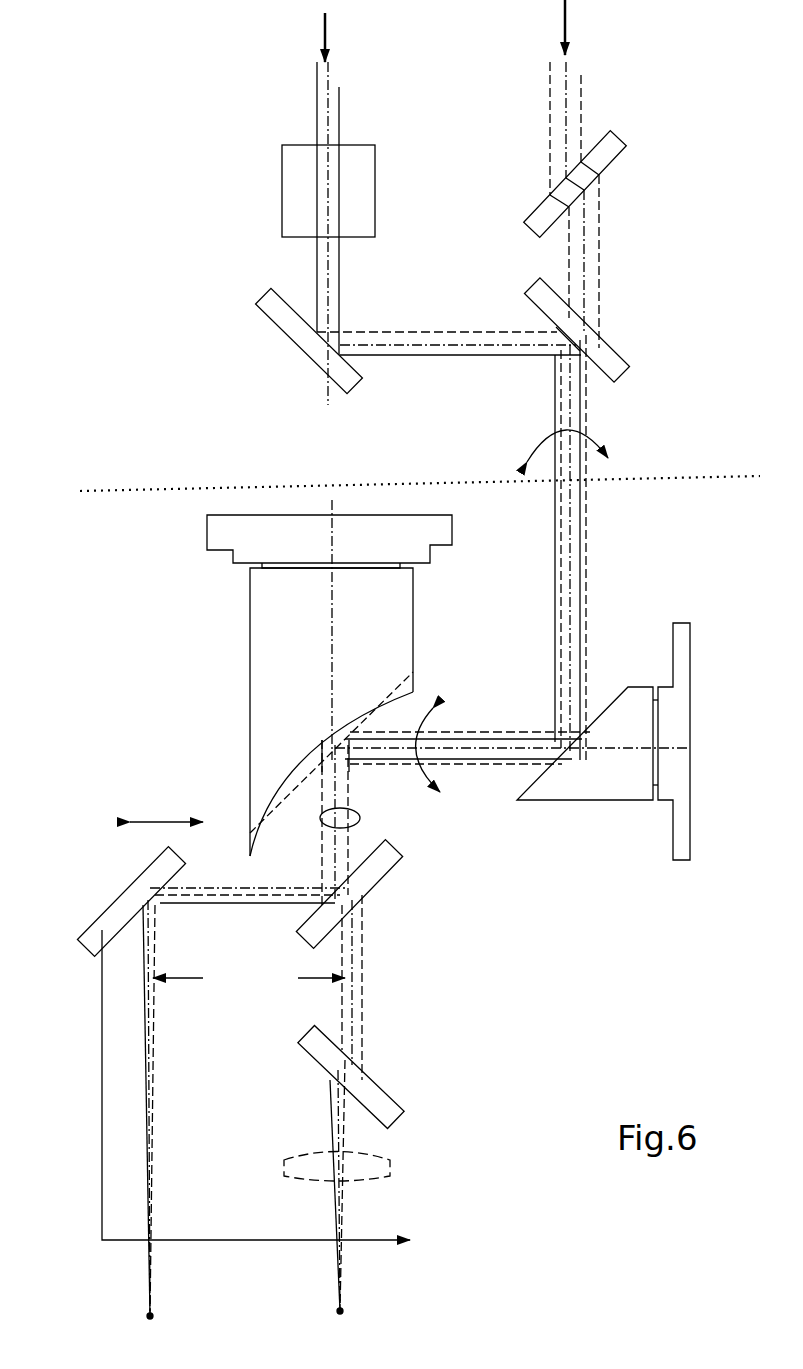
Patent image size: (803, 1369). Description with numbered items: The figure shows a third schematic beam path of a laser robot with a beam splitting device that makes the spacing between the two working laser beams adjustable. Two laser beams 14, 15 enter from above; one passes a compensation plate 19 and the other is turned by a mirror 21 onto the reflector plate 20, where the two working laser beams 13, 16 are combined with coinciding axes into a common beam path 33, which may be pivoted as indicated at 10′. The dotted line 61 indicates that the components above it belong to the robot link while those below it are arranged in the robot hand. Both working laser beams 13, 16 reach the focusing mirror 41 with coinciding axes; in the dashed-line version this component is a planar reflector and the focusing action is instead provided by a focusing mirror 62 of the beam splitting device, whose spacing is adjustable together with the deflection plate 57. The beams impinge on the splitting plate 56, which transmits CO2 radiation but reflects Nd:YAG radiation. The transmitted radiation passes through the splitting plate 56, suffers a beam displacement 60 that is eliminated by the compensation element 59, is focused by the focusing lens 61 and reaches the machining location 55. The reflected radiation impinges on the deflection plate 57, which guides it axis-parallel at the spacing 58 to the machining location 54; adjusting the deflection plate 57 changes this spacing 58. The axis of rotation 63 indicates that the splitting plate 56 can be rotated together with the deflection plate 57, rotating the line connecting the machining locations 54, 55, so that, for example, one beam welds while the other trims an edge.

The first illumination light beam 15 is at (343, 90).
The second illumination light beam 14 is at (582, 85).
The compensation plate 19 is at (613, 145).
The deflecting mirror 21 is at (268, 300).
The reflector plate 20 is at (617, 369).
The common beam path 33 is at (537, 403).
The pivot axis 10′ is at (600, 436).
The dotted line / focusing lens 61 is at (700, 478).
The focusing mirror 41 is at (308, 661).
The axis of rotation 63 is at (348, 826).
The deflection plate 57 is at (160, 822).
The focusing mirror 62 is at (172, 878).
The splitting plate 56 is at (382, 865).
The beam spacing 58 is at (221, 980).
The beam displacement 60 is at (363, 1005).
The compensation element 59 is at (383, 1108).
The working laser beam 16 is at (152, 1138).
The working laser beam 13 is at (343, 1218).
The machining location 54 is at (152, 1316).
The machining location 55 is at (342, 1312).